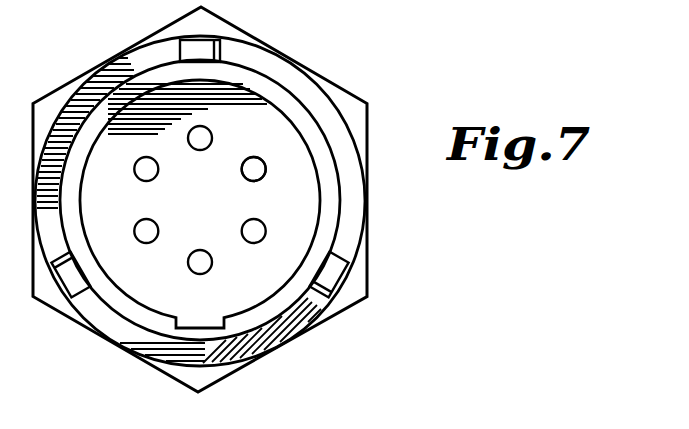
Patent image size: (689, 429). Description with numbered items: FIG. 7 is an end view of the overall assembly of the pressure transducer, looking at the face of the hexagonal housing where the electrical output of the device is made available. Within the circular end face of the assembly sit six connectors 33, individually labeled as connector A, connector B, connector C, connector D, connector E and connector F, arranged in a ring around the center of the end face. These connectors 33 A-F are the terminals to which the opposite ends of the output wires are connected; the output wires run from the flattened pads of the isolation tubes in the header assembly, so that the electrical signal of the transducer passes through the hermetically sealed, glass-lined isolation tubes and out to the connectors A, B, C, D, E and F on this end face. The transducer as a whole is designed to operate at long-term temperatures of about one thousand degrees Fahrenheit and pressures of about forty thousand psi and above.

The connectors 33 is at (265, 170).
The connector A is at (200, 277).
The connector B is at (135, 239).
The connector C is at (139, 156).
The connector D is at (200, 124).
The connector E is at (261, 158).
The connector F is at (264, 239).